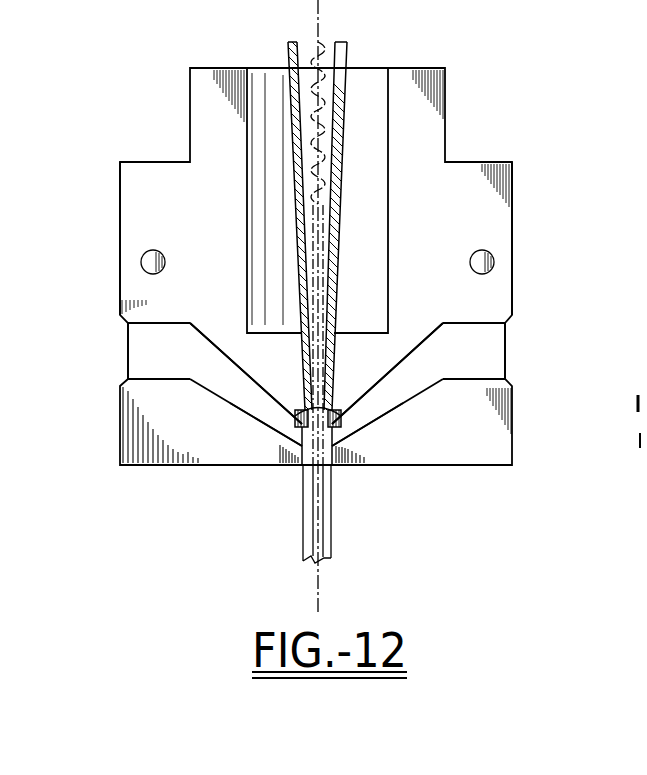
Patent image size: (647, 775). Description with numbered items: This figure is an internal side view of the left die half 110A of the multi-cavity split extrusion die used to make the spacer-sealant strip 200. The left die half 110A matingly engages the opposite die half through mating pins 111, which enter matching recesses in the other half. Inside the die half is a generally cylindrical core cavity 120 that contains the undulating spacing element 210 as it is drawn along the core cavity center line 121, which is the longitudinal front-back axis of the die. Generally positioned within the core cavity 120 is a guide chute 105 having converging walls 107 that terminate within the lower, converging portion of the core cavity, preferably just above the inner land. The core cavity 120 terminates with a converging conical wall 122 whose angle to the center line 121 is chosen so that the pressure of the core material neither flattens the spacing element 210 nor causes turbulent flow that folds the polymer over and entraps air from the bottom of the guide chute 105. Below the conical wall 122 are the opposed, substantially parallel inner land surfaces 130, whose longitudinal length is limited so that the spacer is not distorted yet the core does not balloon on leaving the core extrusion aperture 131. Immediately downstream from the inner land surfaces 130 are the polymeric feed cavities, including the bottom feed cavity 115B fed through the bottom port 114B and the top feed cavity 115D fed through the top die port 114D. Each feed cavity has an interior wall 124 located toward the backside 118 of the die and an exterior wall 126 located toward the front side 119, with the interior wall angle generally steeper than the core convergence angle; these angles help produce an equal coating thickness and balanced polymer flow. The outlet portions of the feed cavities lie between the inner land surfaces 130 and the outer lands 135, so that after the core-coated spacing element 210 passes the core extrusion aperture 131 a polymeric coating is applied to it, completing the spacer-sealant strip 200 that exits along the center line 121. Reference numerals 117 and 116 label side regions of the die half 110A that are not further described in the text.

The left die half 110A is at (186, 96).
The backside 118 is at (213, 67).
The left side wall 117 is at (120, 257).
The right side wall 116 is at (514, 264).
The front side 119 is at (399, 466).
The core cavity 120 is at (371, 97).
The converging walls 107 is at (288, 50).
The guide chute 105 is at (345, 46).
The spacing element 210 is at (320, 135).
The core cavity center line 121 is at (322, 8).
The mating pins 111 is at (146, 253).
The bottom port 114B is at (125, 355).
The top die port 114D is at (514, 352).
The interior wall 124 is at (208, 337).
The bottom feed cavity 115B is at (142, 367).
The top feed cavity 115D is at (490, 367).
The converging conical wall 122 is at (300, 413).
The exterior wall 126 is at (240, 405).
The outer lands 135 is at (314, 427).
The core extrusion aperture 131 is at (299, 427).
The inner land surfaces 130 is at (327, 455).
The spacer-sealant strip 200 is at (303, 539).